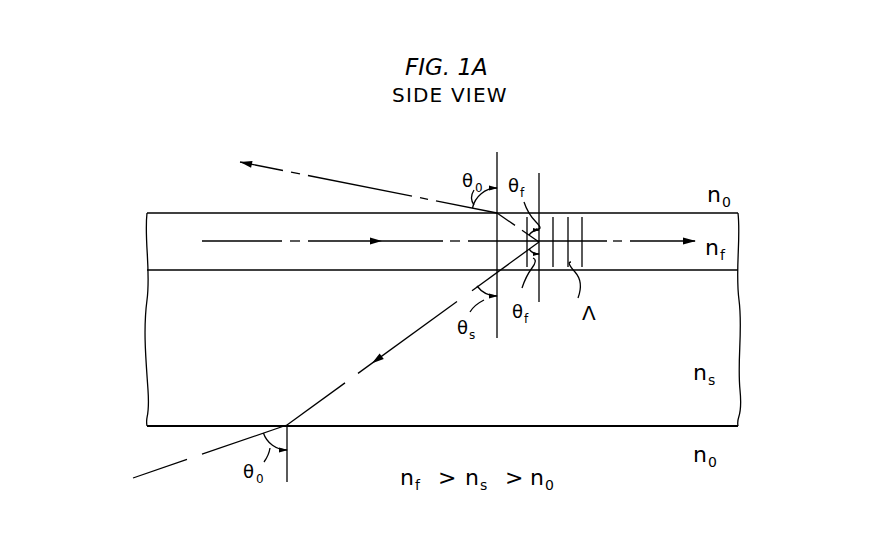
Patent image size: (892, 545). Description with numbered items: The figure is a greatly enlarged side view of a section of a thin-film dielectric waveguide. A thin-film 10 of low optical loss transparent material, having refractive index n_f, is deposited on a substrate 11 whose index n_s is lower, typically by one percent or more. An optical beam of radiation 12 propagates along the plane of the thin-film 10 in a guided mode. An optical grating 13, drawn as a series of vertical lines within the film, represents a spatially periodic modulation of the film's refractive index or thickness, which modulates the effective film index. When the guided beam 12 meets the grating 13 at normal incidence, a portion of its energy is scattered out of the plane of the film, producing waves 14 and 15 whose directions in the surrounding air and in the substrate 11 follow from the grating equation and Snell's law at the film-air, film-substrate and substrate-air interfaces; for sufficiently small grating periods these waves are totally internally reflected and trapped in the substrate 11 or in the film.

The thin-film 10 is at (162, 236).
The substrate 11 is at (172, 355).
The optical beam of radiation 12 is at (226, 240).
The optical grating 13 is at (568, 232).
The scattered wave 14 is at (380, 190).
The scattered wave 15 is at (388, 350).